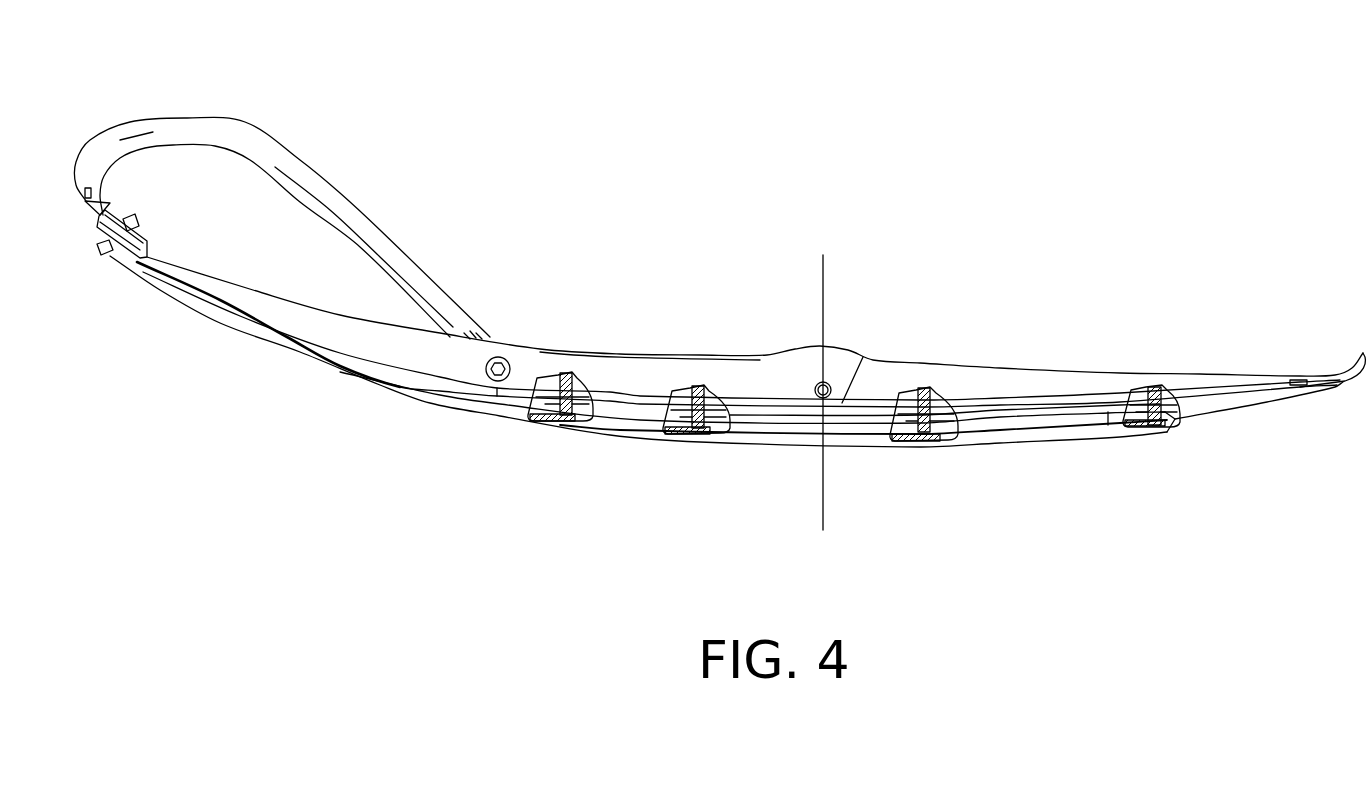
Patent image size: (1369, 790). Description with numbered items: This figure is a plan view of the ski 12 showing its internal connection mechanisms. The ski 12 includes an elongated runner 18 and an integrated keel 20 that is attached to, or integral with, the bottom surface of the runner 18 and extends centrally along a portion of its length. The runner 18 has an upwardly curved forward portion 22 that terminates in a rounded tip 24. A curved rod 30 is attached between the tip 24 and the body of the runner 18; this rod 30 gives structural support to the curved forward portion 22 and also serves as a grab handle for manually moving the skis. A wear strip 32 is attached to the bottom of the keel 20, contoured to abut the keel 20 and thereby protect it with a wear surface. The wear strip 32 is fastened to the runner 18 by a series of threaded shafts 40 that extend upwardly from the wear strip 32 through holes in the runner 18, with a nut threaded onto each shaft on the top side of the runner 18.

The ski 12 is at (525, 138).
The runner 18 is at (643, 366).
The keel 20 is at (1230, 408).
The upwardly curved forward portion 22 is at (240, 330).
The rounded tip 24 is at (122, 252).
The curved rod 30 is at (232, 133).
The wear strip 32 is at (397, 388).
The threaded shafts 40 is at (926, 395).